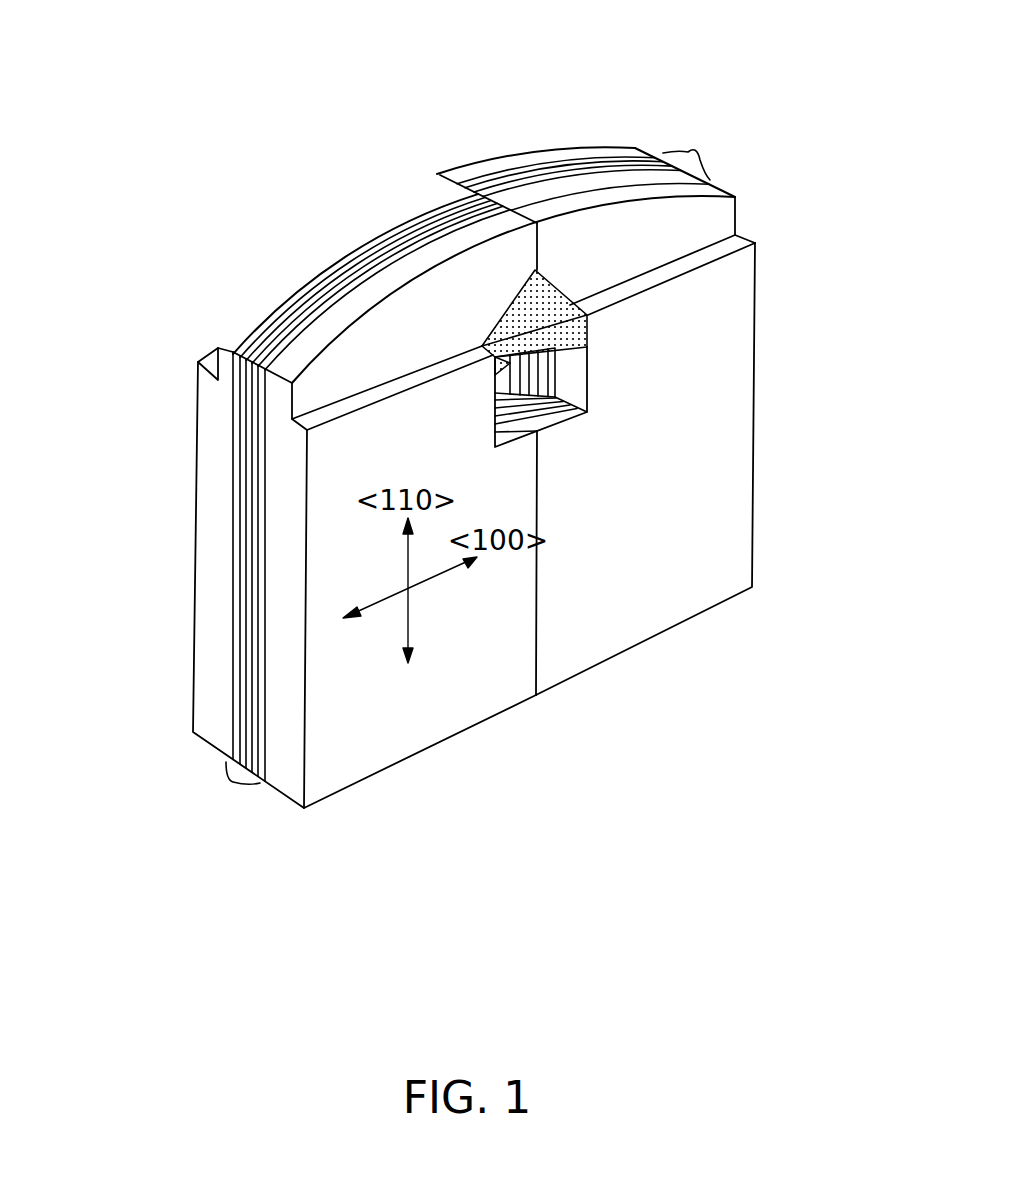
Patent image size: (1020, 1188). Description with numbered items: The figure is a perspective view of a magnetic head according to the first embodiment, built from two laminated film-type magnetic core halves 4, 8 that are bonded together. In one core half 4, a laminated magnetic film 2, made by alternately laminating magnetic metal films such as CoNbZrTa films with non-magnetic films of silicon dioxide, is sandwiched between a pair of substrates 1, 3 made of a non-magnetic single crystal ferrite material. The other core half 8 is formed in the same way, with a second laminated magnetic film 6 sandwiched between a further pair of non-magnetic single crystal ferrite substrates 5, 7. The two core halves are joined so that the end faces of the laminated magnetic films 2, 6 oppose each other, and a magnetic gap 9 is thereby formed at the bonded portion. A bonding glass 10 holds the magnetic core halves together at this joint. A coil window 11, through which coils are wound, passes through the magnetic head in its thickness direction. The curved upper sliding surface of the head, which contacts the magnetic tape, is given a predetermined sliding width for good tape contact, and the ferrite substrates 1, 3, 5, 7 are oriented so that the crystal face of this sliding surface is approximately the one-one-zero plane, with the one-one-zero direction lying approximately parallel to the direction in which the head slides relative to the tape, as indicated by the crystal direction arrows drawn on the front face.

The substrate 1 is at (596, 150).
The laminated magnetic film 2 is at (692, 152).
The substrate 3 is at (705, 225).
The laminated film-type magnetic core half 4 is at (760, 362).
The substrate 5 is at (240, 332).
The laminated magnetic film 6 is at (227, 783).
The substrate 7 is at (386, 738).
The laminated film-type magnetic core half 8 is at (190, 570).
The magnetic gap 9 is at (485, 196).
The bonding glass 10 is at (568, 345).
The coil window 11 is at (550, 413).